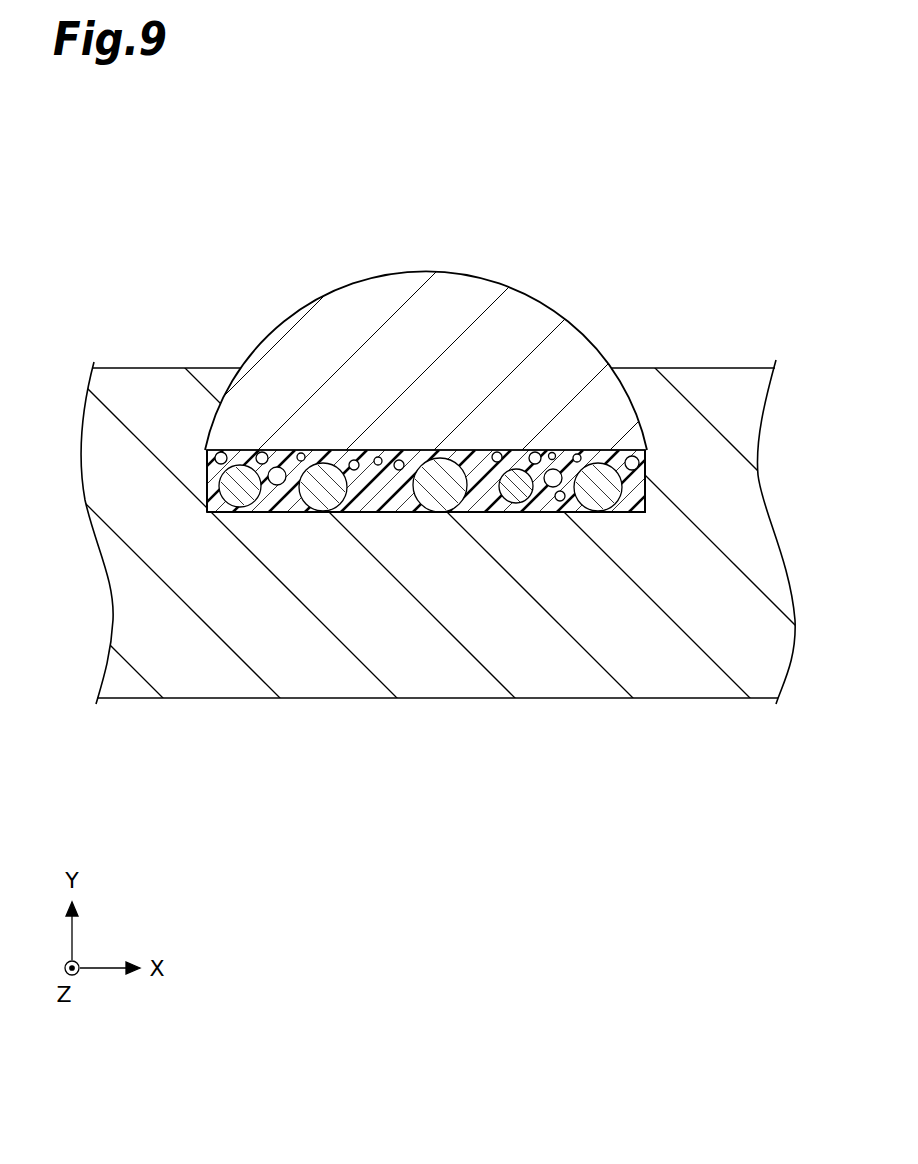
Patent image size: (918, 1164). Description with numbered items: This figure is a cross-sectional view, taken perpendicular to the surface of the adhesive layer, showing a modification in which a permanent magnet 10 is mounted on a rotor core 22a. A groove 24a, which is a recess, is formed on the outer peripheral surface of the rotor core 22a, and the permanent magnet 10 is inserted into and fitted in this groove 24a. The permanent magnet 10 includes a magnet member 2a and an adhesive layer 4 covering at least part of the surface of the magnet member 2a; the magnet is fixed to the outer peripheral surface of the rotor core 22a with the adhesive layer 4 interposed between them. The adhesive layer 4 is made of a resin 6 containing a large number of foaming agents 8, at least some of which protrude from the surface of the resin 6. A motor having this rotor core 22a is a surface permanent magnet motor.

The permanent magnet 10 is at (485, 323).
The magnet member 2a is at (370, 296).
The adhesive layer 4 is at (512, 223).
The resin 6 is at (373, 452).
The foaming agents 8 is at (447, 450).
The rotor core 22a is at (561, 698).
The groove 24a is at (647, 483).